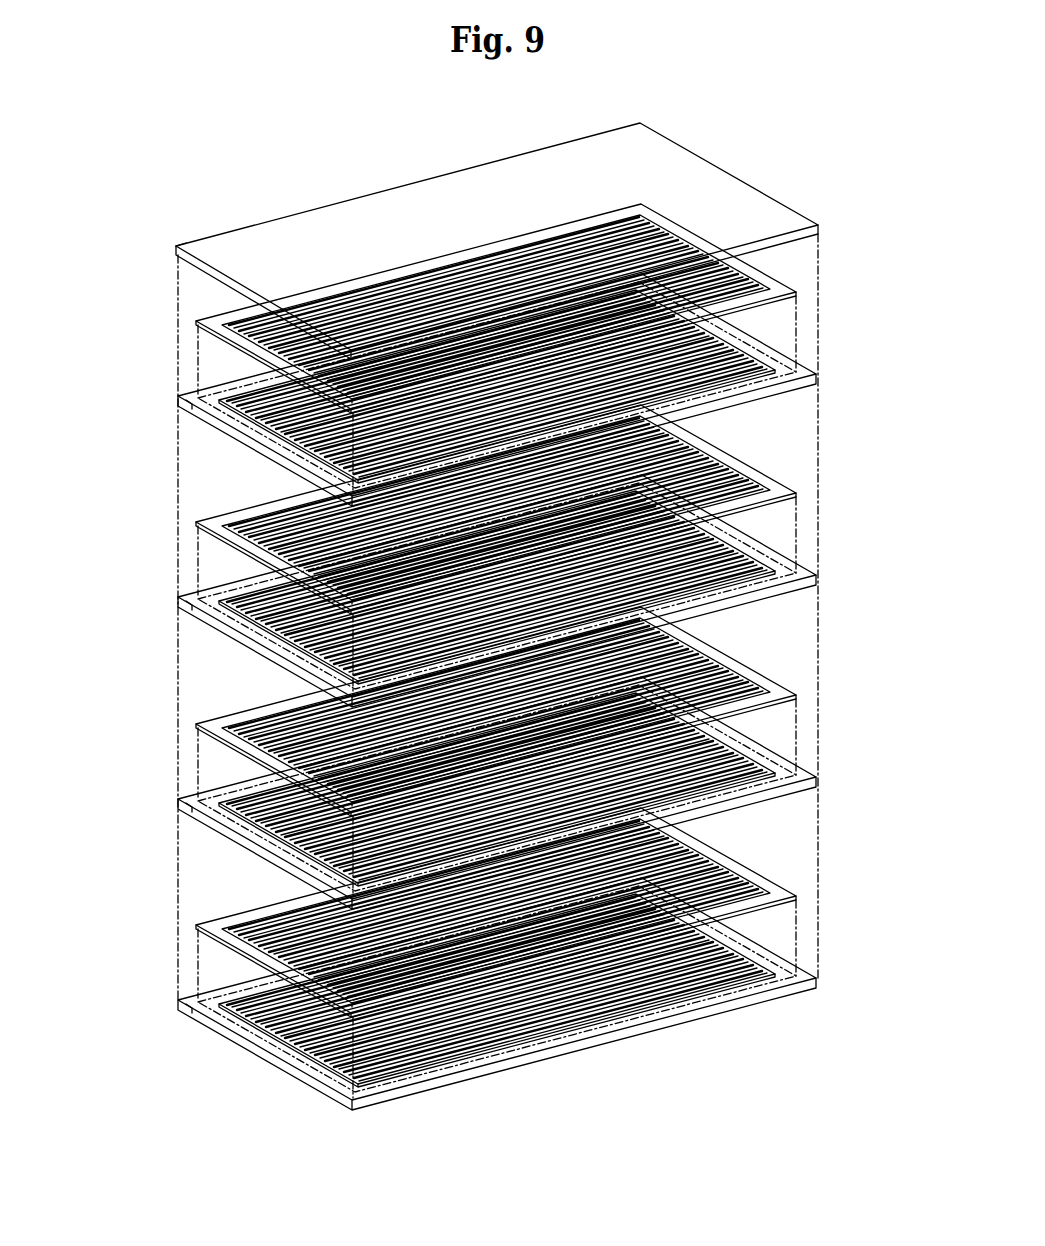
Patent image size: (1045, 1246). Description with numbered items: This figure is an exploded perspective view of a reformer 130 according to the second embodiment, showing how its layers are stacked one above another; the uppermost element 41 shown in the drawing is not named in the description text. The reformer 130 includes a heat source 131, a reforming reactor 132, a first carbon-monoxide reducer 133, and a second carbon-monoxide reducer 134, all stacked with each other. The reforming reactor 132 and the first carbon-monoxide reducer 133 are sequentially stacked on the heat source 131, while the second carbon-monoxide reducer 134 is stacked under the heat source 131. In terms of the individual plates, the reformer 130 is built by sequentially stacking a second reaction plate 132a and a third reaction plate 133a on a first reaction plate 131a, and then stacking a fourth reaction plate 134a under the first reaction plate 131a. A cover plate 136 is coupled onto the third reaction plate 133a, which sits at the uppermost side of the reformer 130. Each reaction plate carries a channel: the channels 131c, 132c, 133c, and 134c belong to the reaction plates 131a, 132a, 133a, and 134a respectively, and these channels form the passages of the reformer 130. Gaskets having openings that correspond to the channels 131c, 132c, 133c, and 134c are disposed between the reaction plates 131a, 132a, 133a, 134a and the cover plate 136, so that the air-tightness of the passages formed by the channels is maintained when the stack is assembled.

The reformer 130 is at (851, 126).
The top plate 41 is at (734, 180).
The cover plate 136 is at (168, 243).
The first carbon-monoxide reducer 133 is at (499, 355).
The reforming reactor 132 is at (499, 556).
The heat source 131 is at (499, 758).
The second carbon-monoxide reducer 134 is at (499, 959).
The channel 133c is at (722, 364).
The channel 132c is at (722, 565).
The channel 131c is at (722, 767).
The channel 134c is at (752, 962).
The third reaction plate 133a is at (152, 365).
The second reaction plate 132a is at (152, 566).
The first reaction plate 131a is at (152, 768).
The fourth reaction plate 134a is at (152, 970).